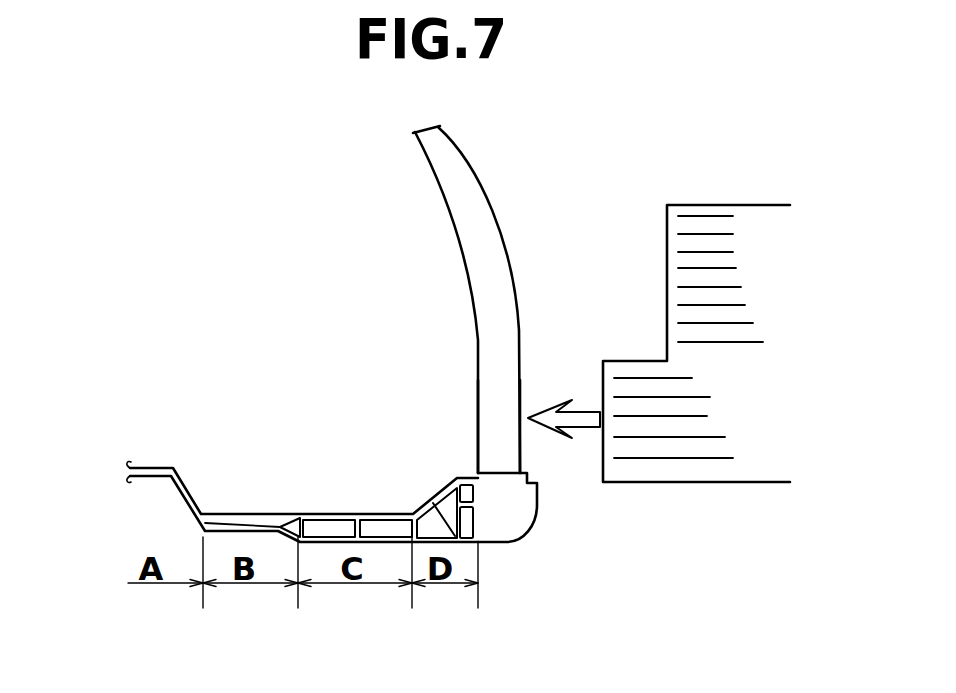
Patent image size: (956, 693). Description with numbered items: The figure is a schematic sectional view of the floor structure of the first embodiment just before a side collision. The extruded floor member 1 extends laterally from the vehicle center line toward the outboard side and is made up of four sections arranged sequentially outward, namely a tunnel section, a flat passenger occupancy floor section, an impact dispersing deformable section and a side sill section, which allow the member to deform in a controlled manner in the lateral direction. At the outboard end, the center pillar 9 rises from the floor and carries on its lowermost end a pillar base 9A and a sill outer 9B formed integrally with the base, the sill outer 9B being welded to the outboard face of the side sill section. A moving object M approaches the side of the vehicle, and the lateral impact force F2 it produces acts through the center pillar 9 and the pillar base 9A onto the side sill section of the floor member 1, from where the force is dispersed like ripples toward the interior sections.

The extruded floor member 1 is at (152, 468).
The center pillar 9 is at (473, 173).
The pillar base 9A is at (493, 433).
The sill outer 9B is at (540, 507).
The moving object M is at (733, 205).
The lateral impact force F2 is at (564, 398).